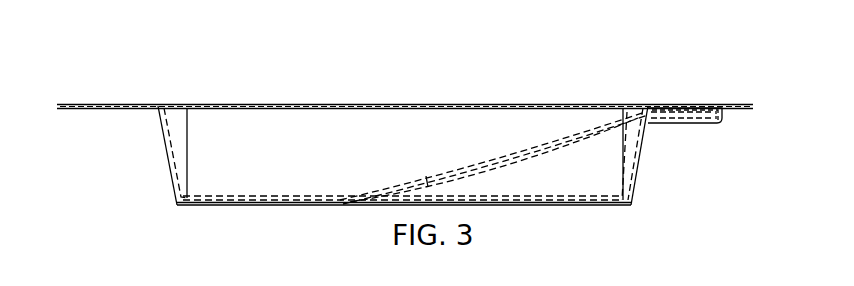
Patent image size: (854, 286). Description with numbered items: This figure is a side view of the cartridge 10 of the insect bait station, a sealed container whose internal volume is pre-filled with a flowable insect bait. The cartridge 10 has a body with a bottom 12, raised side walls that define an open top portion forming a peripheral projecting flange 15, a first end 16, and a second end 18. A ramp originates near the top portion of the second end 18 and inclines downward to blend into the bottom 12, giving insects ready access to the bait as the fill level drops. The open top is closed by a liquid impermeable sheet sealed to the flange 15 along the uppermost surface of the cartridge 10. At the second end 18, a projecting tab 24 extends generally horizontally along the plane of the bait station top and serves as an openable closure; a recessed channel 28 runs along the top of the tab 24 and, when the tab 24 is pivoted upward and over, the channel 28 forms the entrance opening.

The cartridge 10 is at (173, 52).
The bottom 12 is at (533, 205).
The peripheral projecting flange 15 is at (107, 104).
The first end 16 is at (168, 170).
The second end 18 is at (640, 170).
The projecting tab 24 is at (735, 104).
The recessed channel 28 is at (703, 124).